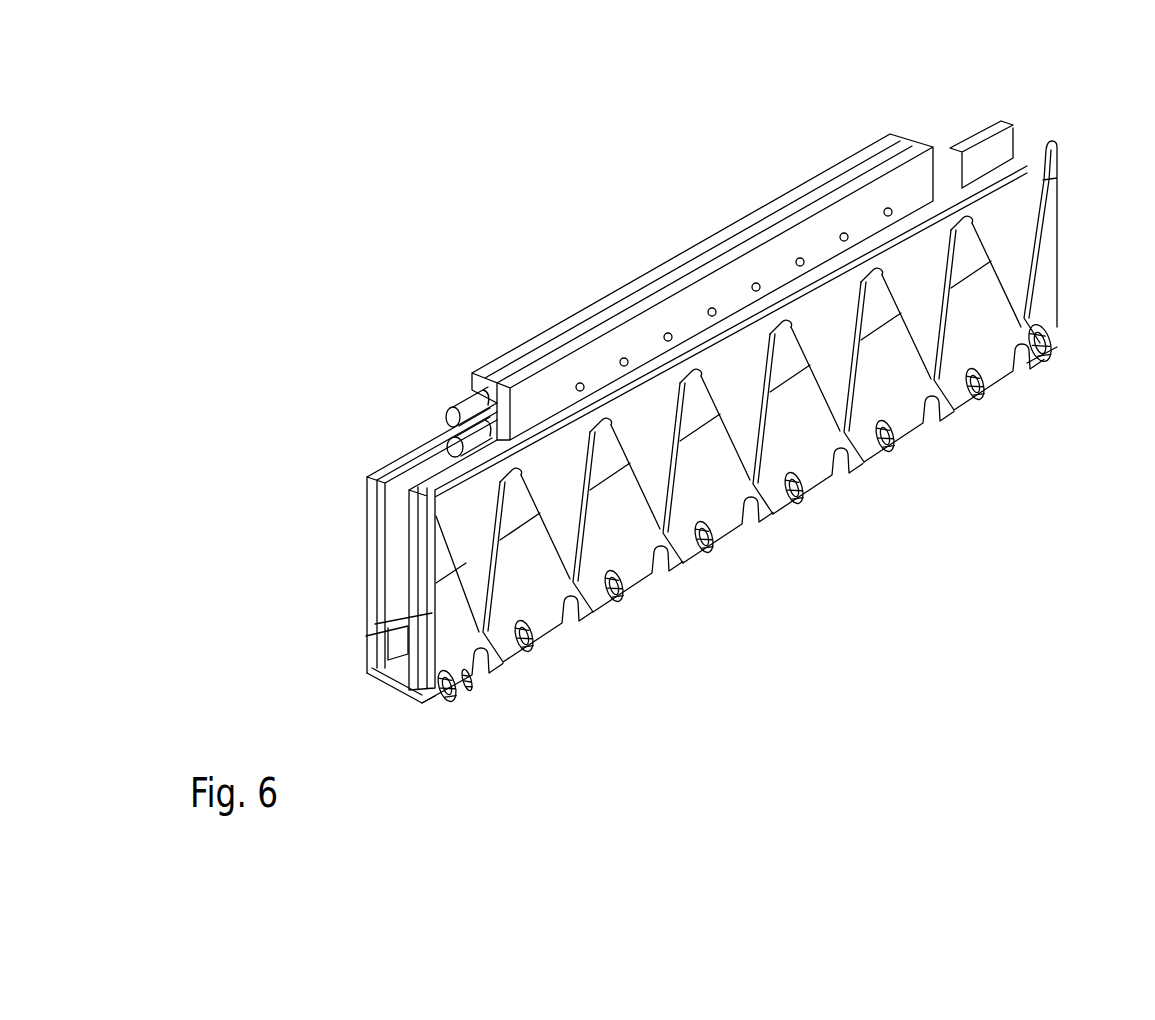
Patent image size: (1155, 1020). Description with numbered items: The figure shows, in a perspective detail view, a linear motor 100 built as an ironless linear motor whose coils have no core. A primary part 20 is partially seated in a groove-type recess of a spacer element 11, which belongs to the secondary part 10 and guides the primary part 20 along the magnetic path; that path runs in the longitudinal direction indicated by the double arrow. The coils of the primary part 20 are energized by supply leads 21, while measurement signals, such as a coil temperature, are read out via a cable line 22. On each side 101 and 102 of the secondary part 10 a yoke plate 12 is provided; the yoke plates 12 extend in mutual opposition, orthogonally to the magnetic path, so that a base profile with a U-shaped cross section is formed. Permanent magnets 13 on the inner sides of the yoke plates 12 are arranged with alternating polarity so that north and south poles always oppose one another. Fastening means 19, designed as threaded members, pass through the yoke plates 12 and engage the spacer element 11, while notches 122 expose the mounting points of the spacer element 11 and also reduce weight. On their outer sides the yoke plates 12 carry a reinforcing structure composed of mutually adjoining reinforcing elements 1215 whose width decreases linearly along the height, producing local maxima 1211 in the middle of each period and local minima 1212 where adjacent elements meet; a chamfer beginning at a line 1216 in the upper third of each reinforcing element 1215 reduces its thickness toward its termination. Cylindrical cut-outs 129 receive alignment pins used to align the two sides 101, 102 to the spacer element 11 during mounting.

The linear motor 100 is at (1060, 100).
The first side of secondary part 101 is at (400, 510).
The second side of secondary part 102 is at (1078, 182).
The secondary part 10 is at (1058, 138).
The spacer element 11 is at (395, 694).
The yoke plate 12 is at (365, 653).
The permanent magnet 13 is at (380, 565).
The fastening means 19 is at (449, 705).
The primary part 20 is at (680, 250).
The supply leads 21 is at (447, 410).
The cable line 22 is at (447, 443).
The notch 122 is at (487, 705).
The cylindrical cut-out 129 is at (470, 700).
The local maximum 1211 is at (771, 322).
The local minimum 1212 is at (764, 497).
The reinforcing element 1215 is at (711, 442).
The chamfer line 1216 is at (776, 394).